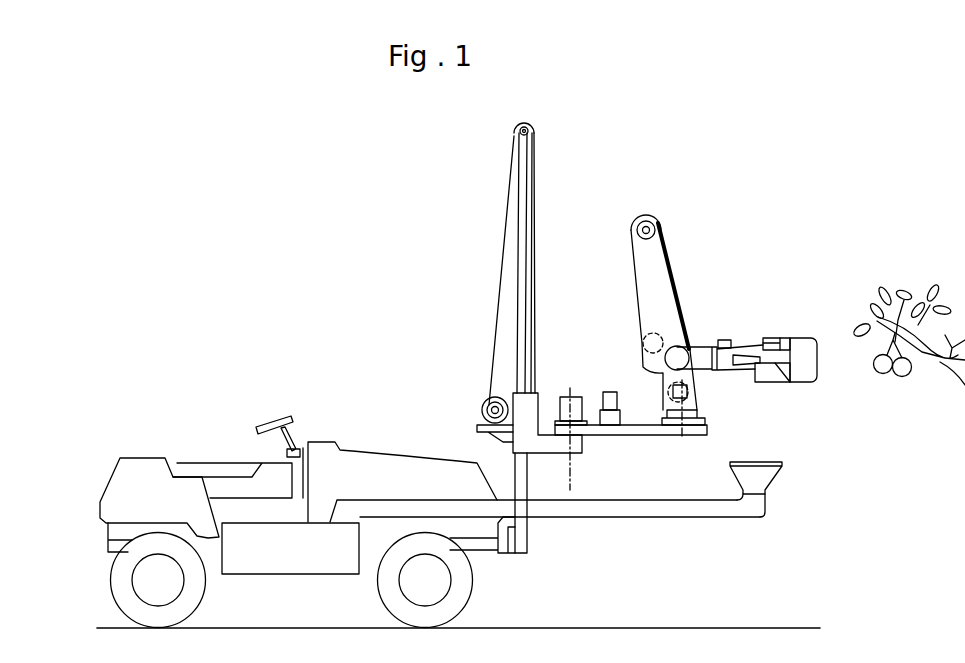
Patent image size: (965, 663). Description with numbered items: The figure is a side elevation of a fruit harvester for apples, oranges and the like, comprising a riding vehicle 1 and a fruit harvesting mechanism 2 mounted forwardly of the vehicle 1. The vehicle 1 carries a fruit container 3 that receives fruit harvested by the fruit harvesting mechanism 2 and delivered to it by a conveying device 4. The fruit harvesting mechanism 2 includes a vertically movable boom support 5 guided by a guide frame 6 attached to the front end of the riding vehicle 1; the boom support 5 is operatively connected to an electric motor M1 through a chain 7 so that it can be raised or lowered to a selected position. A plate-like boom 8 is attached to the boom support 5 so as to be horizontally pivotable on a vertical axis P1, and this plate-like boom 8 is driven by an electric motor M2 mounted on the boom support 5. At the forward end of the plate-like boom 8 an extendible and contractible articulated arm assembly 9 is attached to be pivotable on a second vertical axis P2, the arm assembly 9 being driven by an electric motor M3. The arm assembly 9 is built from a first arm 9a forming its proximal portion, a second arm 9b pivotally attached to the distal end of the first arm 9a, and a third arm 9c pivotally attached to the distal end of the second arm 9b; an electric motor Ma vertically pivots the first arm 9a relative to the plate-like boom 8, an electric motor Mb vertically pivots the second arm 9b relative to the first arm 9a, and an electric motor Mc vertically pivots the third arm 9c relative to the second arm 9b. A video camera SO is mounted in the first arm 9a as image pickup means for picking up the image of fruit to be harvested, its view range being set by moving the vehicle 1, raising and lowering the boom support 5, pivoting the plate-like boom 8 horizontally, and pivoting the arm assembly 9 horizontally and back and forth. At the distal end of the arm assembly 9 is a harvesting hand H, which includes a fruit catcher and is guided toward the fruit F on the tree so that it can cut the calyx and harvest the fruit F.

The riding vehicle 1 is at (323, 397).
The fruit harvesting mechanism 2 is at (772, 187).
The fruit container 3 is at (326, 575).
The conveying device 4 is at (738, 512).
The boom support 5 is at (548, 450).
The guide frame 6 is at (517, 217).
The chain 7 is at (502, 270).
The plate-like boom 8 is at (630, 437).
The articulated arm assembly 9 is at (702, 320).
The first arm 9a is at (645, 308).
The second arm 9b is at (670, 318).
The third arm 9c is at (700, 352).
The electric motor M1 is at (482, 410).
The electric motor M2 is at (582, 412).
The electric motor M3 is at (603, 393).
The electric motor Ma is at (662, 387).
The electric motor Mb is at (645, 340).
The electric motor Mc is at (662, 220).
The video camera SO is at (690, 387).
The vertical axis P1 is at (568, 462).
The vertical axis P2 is at (682, 437).
The harvesting hand H is at (805, 402).
The fruit F is at (887, 375).